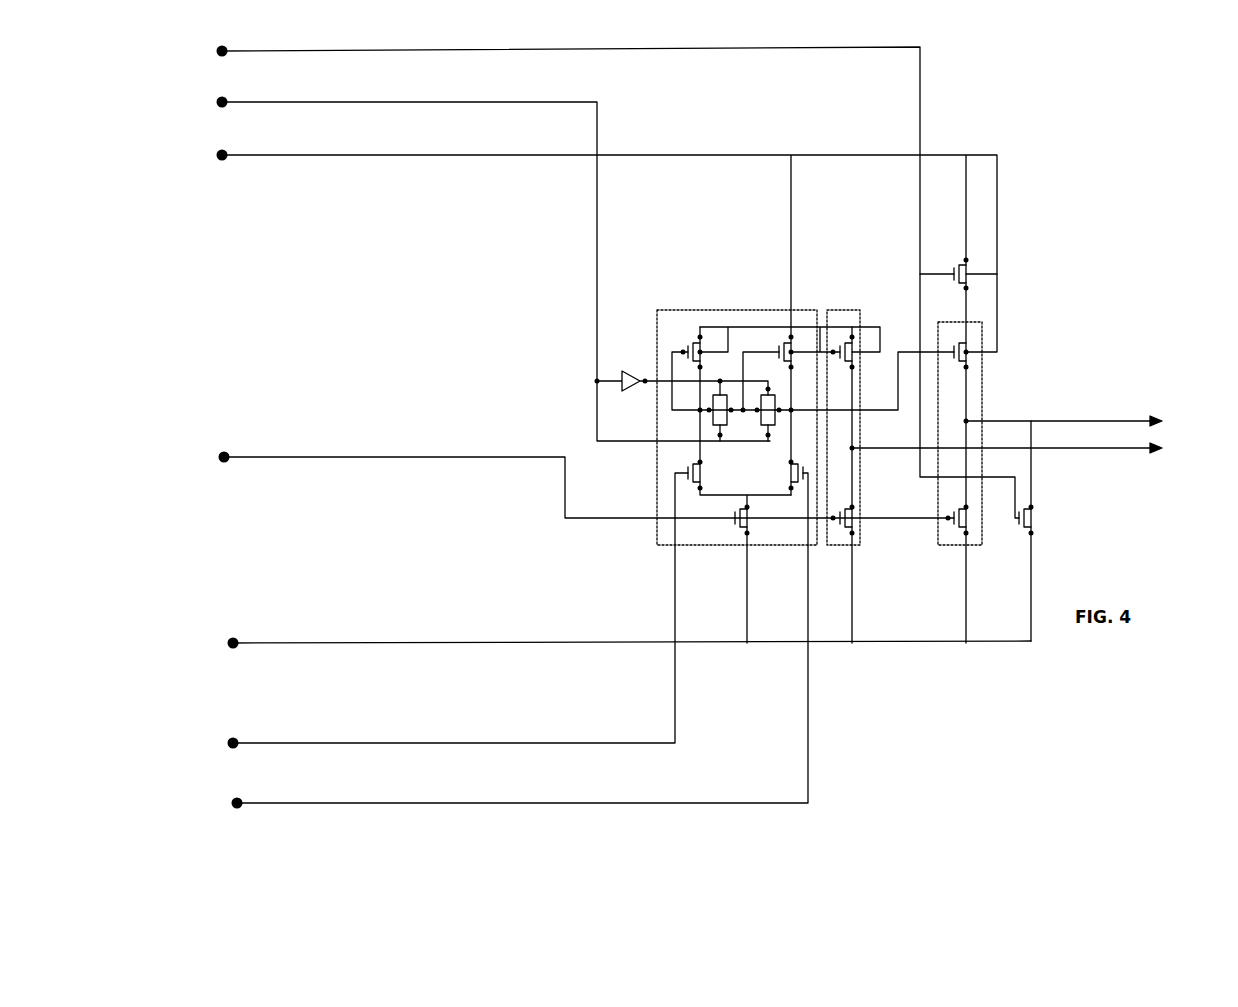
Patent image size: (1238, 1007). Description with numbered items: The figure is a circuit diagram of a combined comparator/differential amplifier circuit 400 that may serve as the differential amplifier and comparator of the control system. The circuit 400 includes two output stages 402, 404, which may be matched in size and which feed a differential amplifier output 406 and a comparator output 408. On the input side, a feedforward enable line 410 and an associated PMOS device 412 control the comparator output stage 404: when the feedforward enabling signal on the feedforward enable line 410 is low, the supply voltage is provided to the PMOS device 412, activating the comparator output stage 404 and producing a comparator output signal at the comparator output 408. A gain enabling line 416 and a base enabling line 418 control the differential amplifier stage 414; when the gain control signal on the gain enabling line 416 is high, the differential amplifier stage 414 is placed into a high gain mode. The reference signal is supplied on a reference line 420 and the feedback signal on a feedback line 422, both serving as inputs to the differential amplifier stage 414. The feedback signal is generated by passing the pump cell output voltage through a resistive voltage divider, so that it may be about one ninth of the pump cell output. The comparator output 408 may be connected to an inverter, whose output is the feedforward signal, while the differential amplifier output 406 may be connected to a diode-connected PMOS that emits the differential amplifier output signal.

The combined comparator/differential amplifier circuit 400 is at (1141, 140).
The output stage 402 is at (858, 322).
The comparator output stage 404 is at (983, 393).
The differential amplifier output 406 is at (1160, 448).
The comparator output 408 is at (1160, 421).
The feedforward enable line 410 is at (921, 82).
The PMOS device 412 is at (964, 266).
The differential amplifier stage 414 is at (720, 309).
The gain enabling line 416 is at (597, 115).
The base enabling line 418 is at (428, 457).
The reference line 420 is at (318, 743).
The feedback line 422 is at (343, 803).